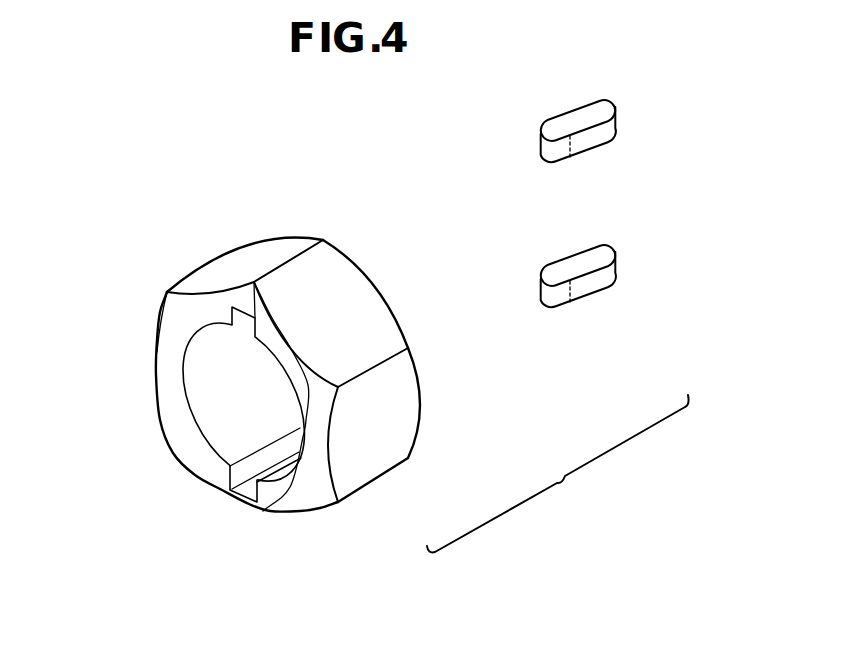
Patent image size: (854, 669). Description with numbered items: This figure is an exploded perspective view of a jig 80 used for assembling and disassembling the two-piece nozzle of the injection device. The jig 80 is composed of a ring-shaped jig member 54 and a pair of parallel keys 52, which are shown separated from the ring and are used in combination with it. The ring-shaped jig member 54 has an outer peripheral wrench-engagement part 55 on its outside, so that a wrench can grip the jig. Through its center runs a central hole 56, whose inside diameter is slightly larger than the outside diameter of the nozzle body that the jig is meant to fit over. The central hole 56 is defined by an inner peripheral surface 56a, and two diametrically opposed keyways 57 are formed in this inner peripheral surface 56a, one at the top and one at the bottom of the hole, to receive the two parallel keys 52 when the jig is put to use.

The parallel key 52 is at (570, 120).
The ring-shaped jig member 54 is at (212, 240).
The outer peripheral wrench-engagement part 55 is at (330, 302).
The central hole 56 is at (232, 393).
The inner peripheral surface 56a is at (235, 440).
The keyway 57 is at (250, 320).
The jig 80 is at (558, 473).